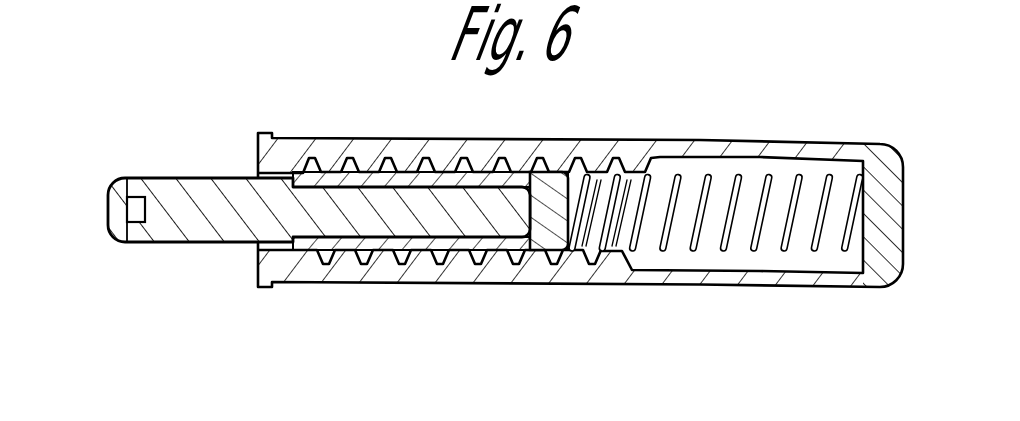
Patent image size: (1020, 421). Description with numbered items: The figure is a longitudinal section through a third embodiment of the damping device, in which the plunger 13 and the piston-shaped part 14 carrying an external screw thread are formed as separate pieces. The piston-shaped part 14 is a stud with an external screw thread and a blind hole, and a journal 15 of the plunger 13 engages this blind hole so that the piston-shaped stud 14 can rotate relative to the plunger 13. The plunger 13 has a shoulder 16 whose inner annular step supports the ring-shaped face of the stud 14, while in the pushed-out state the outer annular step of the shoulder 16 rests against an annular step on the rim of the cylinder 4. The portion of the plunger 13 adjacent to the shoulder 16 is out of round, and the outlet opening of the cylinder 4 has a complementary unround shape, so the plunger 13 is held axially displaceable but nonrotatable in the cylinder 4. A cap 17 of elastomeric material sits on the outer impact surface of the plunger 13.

The cylinder 4 is at (580, 166).
The plunger 13 is at (319, 160).
The piston-shaped part 14 is at (430, 310).
The journal 15 is at (540, 276).
The shoulder 16 is at (430, 96).
The cap 17 is at (94, 181).